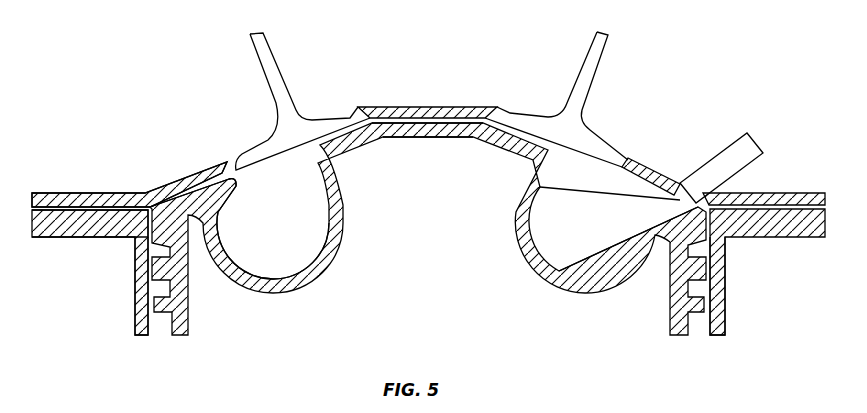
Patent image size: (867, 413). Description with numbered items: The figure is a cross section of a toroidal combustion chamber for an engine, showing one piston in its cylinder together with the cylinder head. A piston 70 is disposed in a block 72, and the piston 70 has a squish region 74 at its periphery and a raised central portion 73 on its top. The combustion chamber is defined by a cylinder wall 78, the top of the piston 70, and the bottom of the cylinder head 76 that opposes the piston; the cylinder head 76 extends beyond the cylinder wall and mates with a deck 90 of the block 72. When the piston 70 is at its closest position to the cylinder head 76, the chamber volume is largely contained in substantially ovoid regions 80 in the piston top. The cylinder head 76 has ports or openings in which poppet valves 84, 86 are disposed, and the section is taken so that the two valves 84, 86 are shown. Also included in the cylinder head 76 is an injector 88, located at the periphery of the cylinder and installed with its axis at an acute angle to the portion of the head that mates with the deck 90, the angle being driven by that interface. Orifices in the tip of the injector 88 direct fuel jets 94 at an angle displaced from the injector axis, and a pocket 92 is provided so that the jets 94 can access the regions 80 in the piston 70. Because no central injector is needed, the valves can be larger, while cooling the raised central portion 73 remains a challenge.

The piston 70 is at (330, 282).
The block 72 is at (122, 250).
The raised central portion 73 is at (453, 130).
The squish region 74 is at (192, 208).
The cylinder head 76 is at (430, 106).
The cylinder wall 78 is at (720, 307).
The ovoid regions 80 is at (285, 235).
The poppet valve 84 is at (271, 62).
The poppet valve 86 is at (588, 62).
The injector 88 is at (738, 152).
The deck 90 is at (802, 228).
The pocket 92 is at (663, 215).
The fuel jets 94 is at (595, 231).